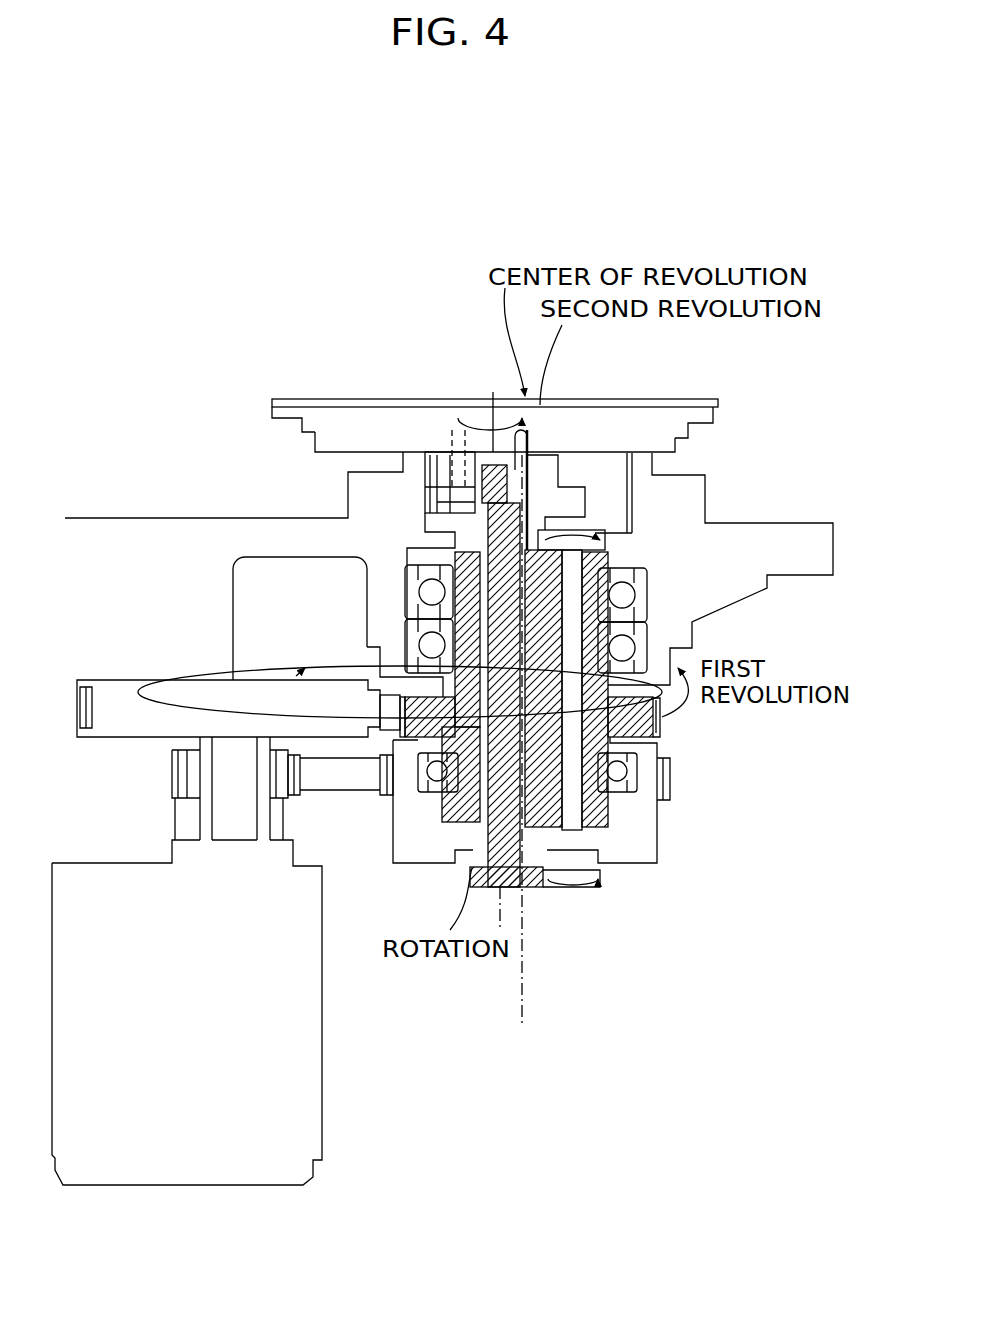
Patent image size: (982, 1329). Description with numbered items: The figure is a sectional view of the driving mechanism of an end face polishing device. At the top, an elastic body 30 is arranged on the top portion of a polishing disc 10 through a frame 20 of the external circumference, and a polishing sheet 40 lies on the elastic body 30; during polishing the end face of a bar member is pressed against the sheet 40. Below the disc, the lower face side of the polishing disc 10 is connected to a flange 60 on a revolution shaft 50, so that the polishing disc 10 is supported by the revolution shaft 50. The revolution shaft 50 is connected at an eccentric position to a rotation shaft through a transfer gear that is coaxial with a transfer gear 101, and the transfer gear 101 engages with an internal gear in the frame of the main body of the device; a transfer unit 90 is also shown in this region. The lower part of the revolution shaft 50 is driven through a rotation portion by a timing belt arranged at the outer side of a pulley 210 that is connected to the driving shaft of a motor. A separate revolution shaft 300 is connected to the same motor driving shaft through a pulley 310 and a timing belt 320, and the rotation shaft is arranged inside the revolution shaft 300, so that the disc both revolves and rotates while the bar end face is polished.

The polishing disc 10 is at (580, 440).
The frame 20 is at (700, 418).
The elastic body 30 is at (292, 400).
The polishing sheet 40 is at (442, 399).
The revolution shaft 50 is at (480, 462).
The flange 60 is at (465, 470).
The transfer unit 90 is at (428, 502).
The transfer gear 101 is at (593, 537).
The pulley 210 is at (173, 770).
The revolution shaft 300 is at (648, 732).
The pulley 310 is at (157, 667).
The timing belt 320 is at (380, 710).